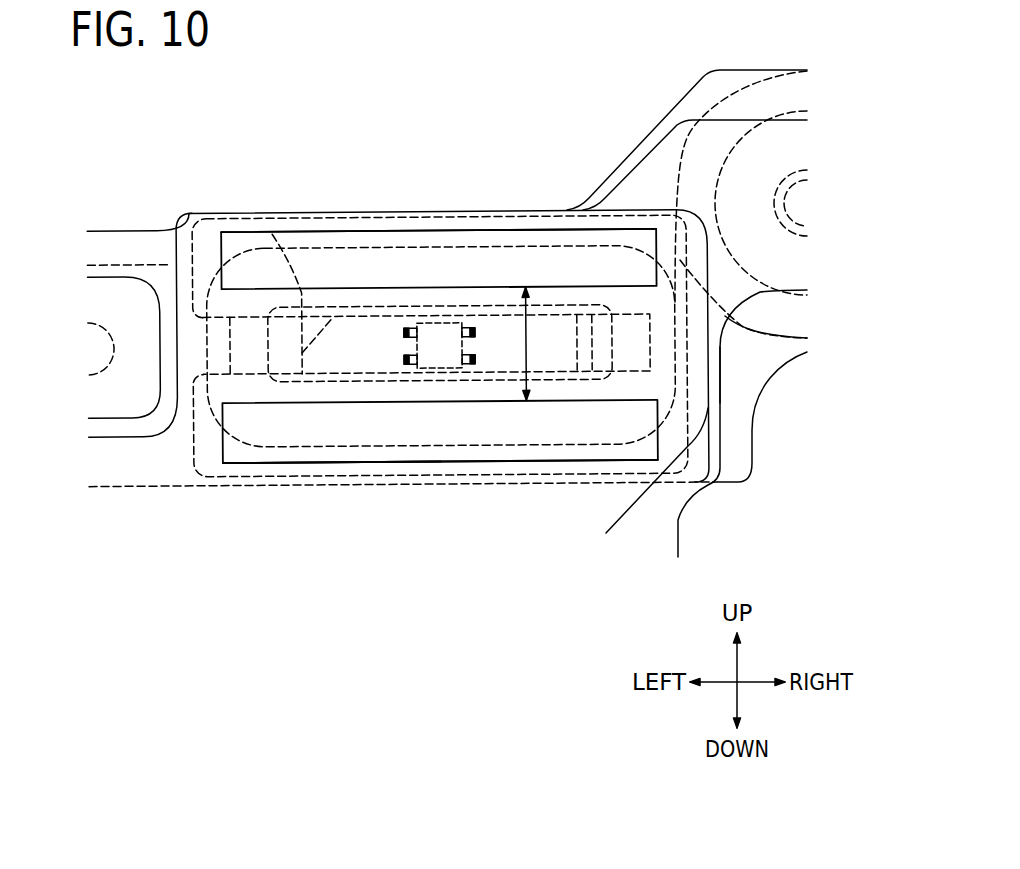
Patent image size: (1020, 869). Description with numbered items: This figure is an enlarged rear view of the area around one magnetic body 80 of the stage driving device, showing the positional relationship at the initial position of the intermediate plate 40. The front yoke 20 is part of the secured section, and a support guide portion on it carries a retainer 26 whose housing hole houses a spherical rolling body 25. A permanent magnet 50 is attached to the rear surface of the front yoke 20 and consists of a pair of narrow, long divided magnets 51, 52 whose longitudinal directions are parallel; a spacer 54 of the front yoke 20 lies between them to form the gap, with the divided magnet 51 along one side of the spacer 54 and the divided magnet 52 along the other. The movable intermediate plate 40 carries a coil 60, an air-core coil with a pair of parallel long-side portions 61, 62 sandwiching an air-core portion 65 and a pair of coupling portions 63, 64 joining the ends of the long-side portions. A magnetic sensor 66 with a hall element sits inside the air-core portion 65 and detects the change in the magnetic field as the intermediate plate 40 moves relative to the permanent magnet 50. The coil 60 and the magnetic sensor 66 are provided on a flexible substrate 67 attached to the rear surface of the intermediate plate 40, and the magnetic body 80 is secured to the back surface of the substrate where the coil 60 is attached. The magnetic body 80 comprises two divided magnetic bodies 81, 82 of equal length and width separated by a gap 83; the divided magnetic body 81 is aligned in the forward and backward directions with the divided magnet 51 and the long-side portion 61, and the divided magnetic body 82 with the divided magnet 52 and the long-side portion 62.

The front yoke 20 is at (673, 107).
The rolling body 25 is at (790, 195).
The retainer 26 is at (757, 165).
The intermediate plate 40 is at (633, 177).
The permanent magnet 50 is at (190, 442).
The divided magnet 51 is at (208, 240).
The divided magnet 52 is at (213, 455).
The spacer 54 is at (498, 333).
The coil 60 is at (246, 245).
The long-side portion 61 is at (347, 257).
The long-side portion 62 is at (343, 427).
The coupling portion 63 is at (650, 338).
The coupling portion 64 is at (207, 340).
The air-core portion 65 is at (273, 233).
The magnetic sensor 66 is at (438, 333).
The flexible substrate 67 is at (630, 517).
The magnetic body 80 is at (438, 463).
The divided magnetic body 81 is at (467, 240).
The divided magnetic body 82 is at (517, 450).
The gap 83 is at (539, 343).